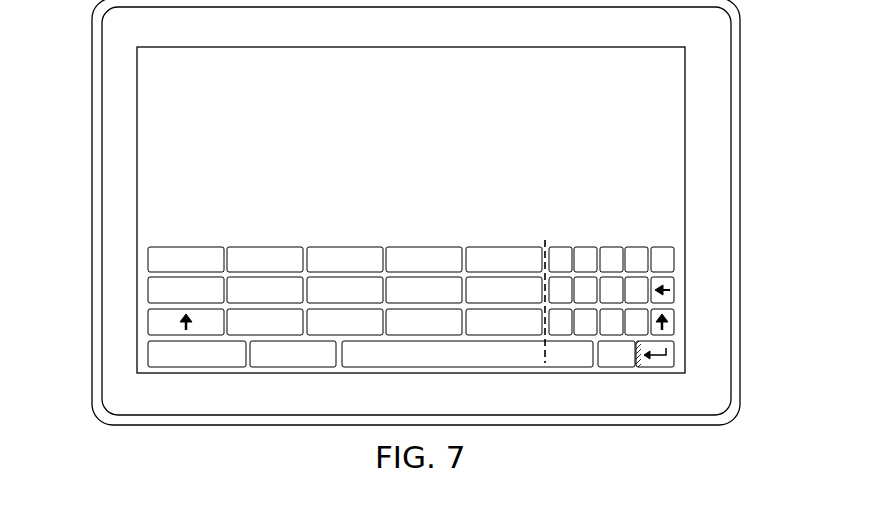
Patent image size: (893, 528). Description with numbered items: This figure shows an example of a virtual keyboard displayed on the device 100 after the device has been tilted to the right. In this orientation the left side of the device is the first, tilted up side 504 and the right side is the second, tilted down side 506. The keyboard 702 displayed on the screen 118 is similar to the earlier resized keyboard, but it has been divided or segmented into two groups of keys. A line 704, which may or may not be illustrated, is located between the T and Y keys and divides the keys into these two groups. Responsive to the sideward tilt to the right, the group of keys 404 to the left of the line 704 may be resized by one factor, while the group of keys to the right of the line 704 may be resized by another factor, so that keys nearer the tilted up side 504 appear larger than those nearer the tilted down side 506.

The device 100 is at (419, 225).
The first, tilted up side 504 is at (91, 95).
The second, tilted down side 506 is at (742, 51).
The touch screen display 118 is at (665, 92).
The keys 404 is at (343, 247).
The line 704 is at (547, 243).
The keyboard 702 is at (677, 250).